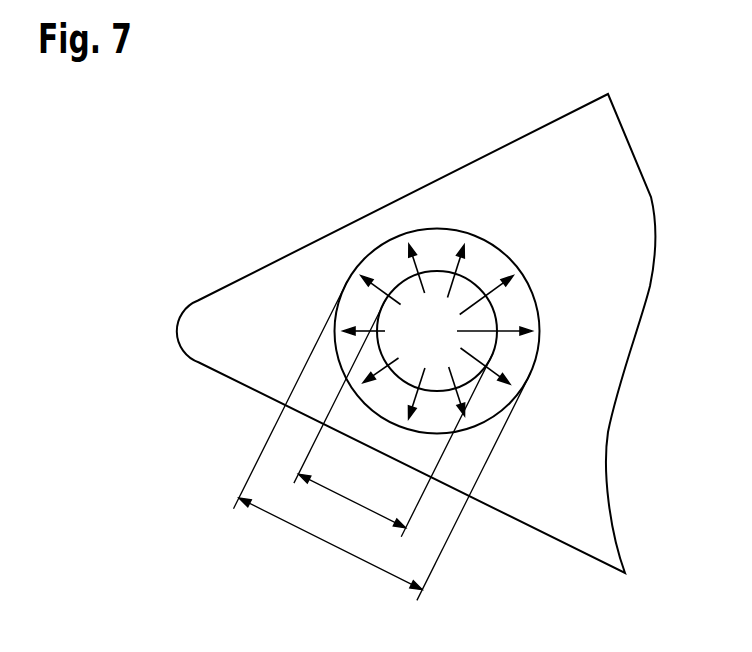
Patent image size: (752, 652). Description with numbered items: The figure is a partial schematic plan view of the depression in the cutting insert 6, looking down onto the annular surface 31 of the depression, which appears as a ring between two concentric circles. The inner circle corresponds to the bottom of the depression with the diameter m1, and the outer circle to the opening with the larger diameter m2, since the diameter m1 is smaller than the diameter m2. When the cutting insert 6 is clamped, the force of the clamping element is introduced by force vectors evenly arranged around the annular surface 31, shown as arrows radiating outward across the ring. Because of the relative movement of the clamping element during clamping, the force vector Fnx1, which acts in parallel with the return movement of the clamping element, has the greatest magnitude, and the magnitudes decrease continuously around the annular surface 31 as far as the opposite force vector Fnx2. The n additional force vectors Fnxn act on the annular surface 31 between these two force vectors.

The cutting insert 6 is at (585, 184).
The annular surface 31 is at (428, 242).
The force vector Fnx1 is at (505, 326).
The force vector Fnx2 is at (360, 328).
The force vectors Fnxn is at (421, 293).
The diameter m1 is at (393, 418).
The diameter m2 is at (382, 441).